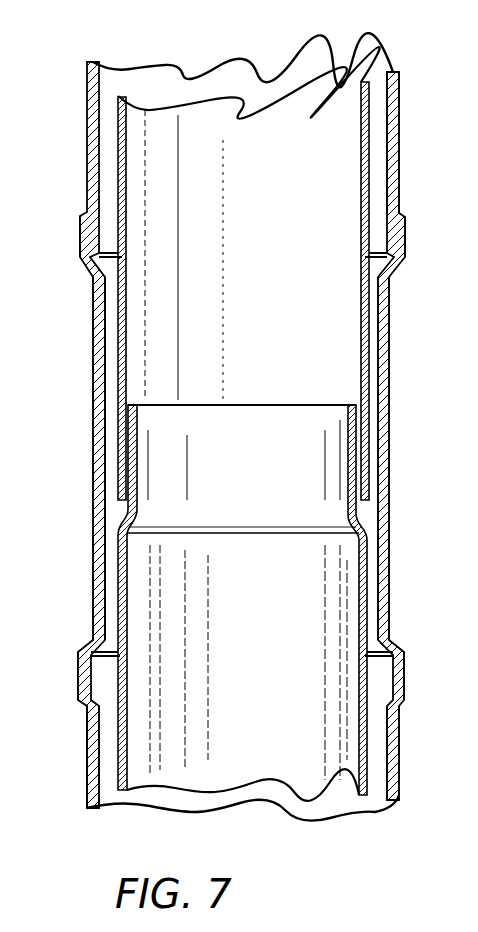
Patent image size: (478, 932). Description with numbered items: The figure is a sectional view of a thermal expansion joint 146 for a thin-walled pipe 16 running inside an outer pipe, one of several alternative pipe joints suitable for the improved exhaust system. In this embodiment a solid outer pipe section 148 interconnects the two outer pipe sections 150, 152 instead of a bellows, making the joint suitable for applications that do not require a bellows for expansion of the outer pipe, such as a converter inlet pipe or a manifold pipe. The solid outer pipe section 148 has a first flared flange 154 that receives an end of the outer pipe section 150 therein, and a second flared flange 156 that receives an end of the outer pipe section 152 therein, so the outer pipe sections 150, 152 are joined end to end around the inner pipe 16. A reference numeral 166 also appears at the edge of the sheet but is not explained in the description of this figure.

The pipe / conduit 16 is at (237, 106).
The thermal expansion joint 146 is at (406, 100).
The outer pipe section 150 is at (400, 152).
The first flared flange 154 is at (80, 232).
The solid outer pipe section 148 is at (100, 413).
The second flared flange 156 is at (80, 657).
The outer pipe section 152 is at (400, 742).
The adjacent figure reference 166 is at (475, 924).